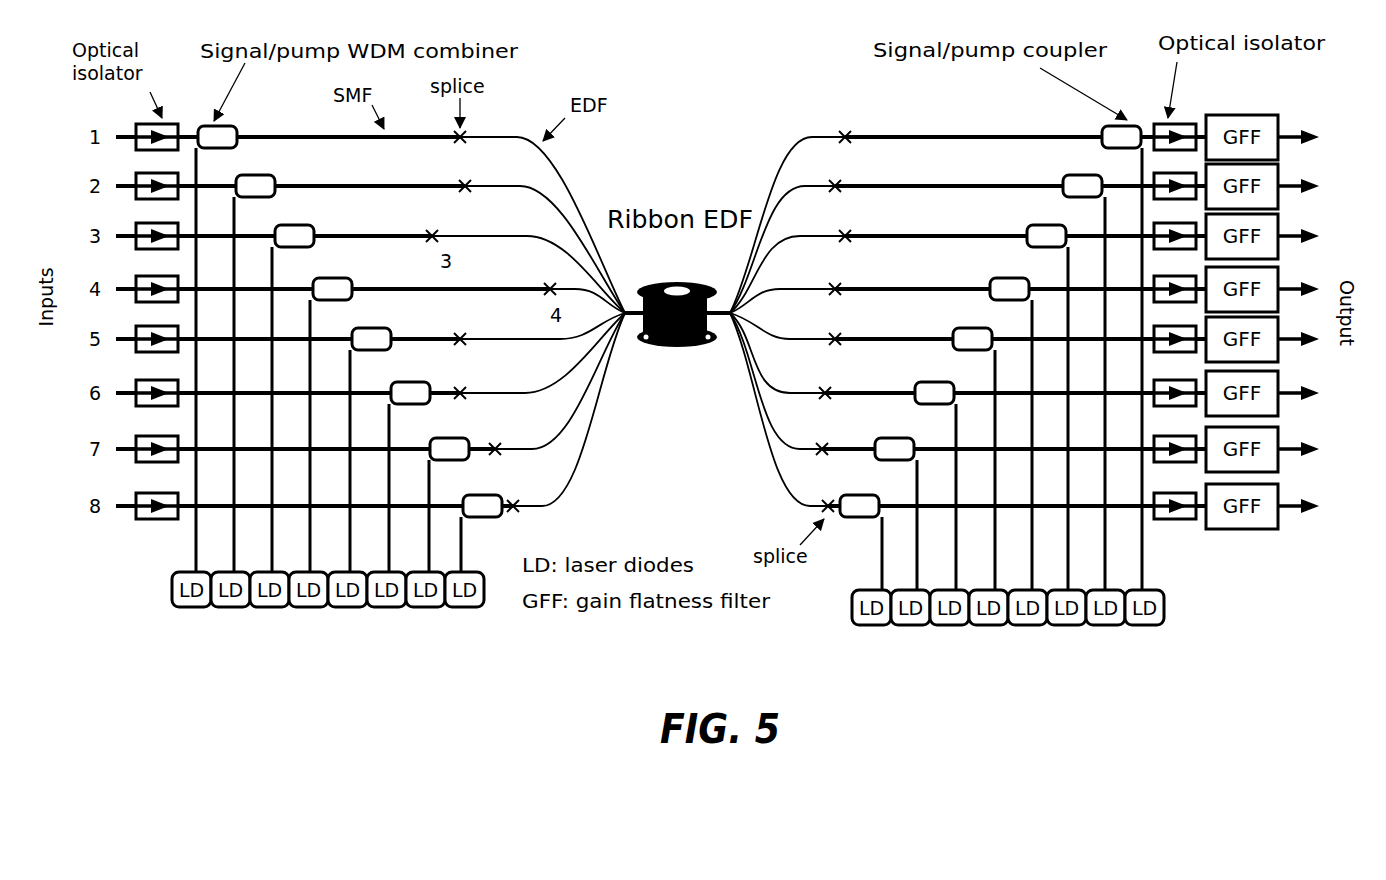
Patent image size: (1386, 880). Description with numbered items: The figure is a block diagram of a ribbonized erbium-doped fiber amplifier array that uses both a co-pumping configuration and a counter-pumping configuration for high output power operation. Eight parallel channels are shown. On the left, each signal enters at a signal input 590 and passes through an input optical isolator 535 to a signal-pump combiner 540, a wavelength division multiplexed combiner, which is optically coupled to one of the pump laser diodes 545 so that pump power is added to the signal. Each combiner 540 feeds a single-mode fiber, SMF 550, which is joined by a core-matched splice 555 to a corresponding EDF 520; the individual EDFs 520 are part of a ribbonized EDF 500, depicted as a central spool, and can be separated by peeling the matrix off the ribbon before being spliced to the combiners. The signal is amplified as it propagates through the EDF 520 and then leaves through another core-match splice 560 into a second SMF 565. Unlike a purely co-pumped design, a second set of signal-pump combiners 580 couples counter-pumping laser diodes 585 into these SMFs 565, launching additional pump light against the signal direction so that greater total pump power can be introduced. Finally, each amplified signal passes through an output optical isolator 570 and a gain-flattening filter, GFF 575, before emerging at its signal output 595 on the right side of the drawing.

The ribbonized EDF 500 is at (690, 346).
The EDF 520 is at (557, 178).
The input optical isolator 535 is at (158, 521).
The signal-pump combiner 540 is at (229, 125).
The pump laser diode 545 is at (197, 610).
The SMF 550 is at (345, 142).
The core-matched splice 555 is at (467, 146).
The core-match splice 560 is at (845, 128).
The SMF 565 is at (930, 130).
The output optical isolator 570 is at (1180, 122).
The gain-flattening filter 575 is at (1250, 113).
The signal-pump combiner 580 is at (1118, 124).
The counter-pumping laser diode 585 is at (1148, 628).
The signal input 590 is at (126, 143).
The signal output 595 is at (1302, 130).